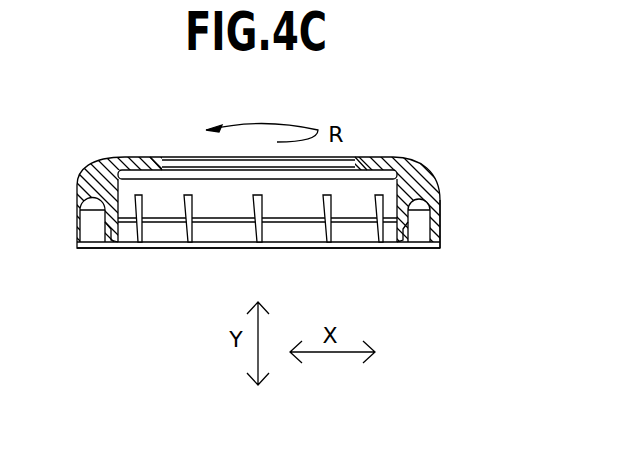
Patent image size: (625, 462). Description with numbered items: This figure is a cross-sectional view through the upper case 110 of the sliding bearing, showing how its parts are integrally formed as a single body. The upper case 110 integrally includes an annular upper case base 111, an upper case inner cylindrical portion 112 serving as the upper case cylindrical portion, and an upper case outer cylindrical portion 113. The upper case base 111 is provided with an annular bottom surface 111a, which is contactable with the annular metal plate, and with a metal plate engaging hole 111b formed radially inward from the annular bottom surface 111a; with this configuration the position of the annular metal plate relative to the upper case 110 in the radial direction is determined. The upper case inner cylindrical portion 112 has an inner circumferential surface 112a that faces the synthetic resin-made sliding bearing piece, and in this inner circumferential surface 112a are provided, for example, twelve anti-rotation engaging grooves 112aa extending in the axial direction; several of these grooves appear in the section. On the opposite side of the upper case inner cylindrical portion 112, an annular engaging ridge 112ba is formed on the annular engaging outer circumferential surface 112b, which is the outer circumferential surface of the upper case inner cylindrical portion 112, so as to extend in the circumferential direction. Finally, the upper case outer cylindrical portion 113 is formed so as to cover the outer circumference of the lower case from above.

The upper case 110 is at (97, 160).
The upper case base 111 is at (412, 170).
The annular bottom surface 111a is at (143, 176).
The metal plate engaging hole 111b is at (345, 160).
The upper case inner cylindrical portion 112 is at (408, 232).
The inner circumferential surface 112a is at (280, 213).
The anti-rotation engaging grooves 112aa is at (192, 226).
The annular engaging outer circumferential surface 112b is at (105, 210).
The annular engaging ridge 112ba is at (415, 232).
The upper case outer cylindrical portion 113 is at (441, 229).